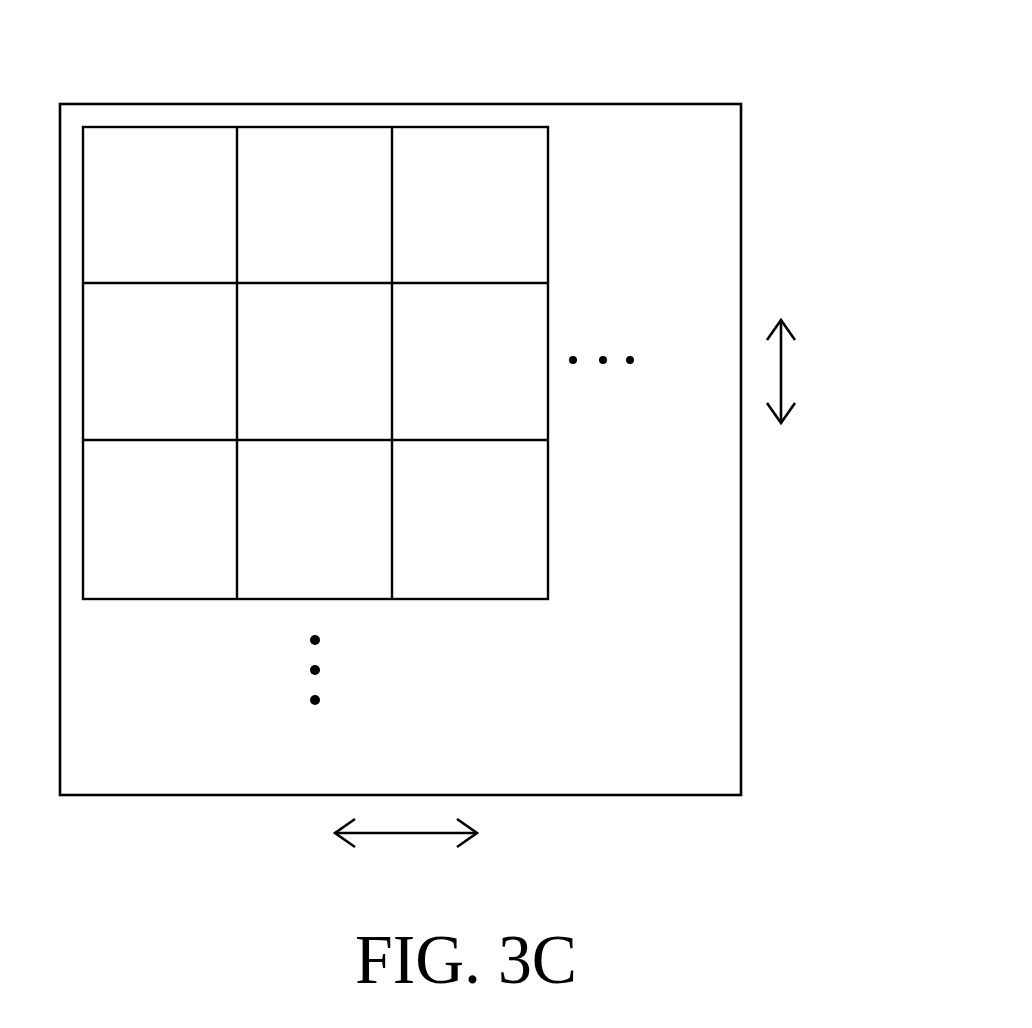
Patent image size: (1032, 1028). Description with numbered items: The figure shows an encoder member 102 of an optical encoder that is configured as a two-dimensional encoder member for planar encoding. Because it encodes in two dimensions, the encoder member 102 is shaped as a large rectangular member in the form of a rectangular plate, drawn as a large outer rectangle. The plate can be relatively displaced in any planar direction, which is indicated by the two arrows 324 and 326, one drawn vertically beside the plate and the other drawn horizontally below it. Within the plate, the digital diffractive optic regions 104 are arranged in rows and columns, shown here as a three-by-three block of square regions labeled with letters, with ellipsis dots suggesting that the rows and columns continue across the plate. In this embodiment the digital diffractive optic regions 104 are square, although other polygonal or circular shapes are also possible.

The encoder member 102 is at (650, 107).
The digital diffractive optic regions 104 is at (194, 156).
The arrow 324 is at (787, 373).
The arrow 326 is at (400, 833).